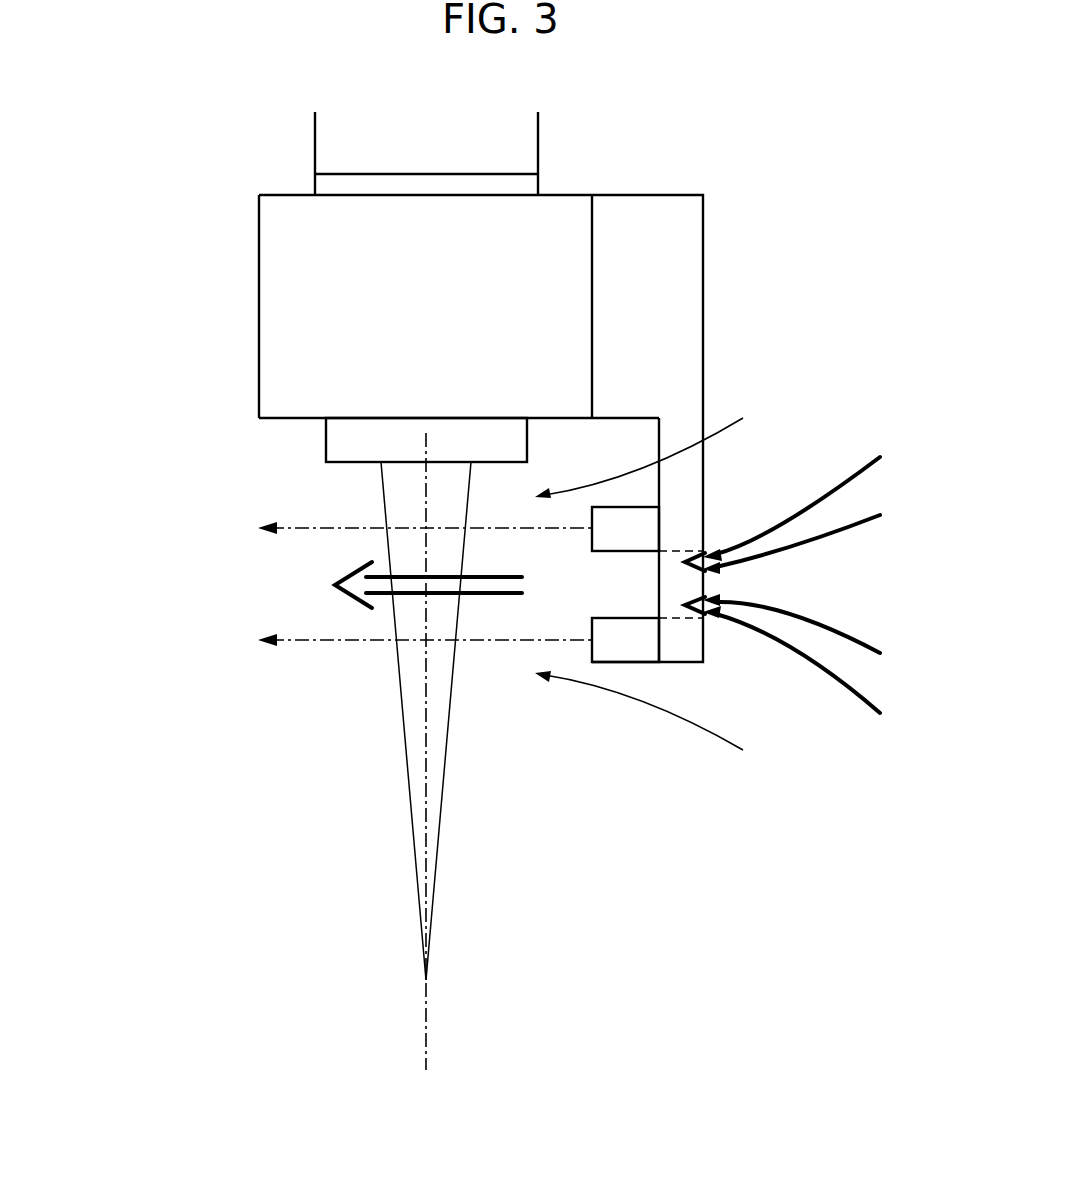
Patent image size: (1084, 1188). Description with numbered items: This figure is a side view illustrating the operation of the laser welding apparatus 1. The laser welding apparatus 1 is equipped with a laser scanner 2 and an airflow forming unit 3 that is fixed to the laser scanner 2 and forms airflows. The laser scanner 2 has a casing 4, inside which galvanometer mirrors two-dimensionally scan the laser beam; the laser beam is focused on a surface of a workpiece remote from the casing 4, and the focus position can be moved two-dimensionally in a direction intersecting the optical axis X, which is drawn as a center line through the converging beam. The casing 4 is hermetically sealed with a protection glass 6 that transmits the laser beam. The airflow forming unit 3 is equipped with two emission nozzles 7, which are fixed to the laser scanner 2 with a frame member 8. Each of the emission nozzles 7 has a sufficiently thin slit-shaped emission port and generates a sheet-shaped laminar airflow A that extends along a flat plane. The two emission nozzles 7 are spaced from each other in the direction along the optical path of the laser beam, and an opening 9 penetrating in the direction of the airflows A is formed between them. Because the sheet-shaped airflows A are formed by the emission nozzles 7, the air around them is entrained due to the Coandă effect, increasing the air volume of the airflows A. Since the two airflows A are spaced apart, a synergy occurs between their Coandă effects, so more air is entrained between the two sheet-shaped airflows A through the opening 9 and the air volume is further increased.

The laser welding apparatus 1 is at (151, 159).
The laser scanner 2 is at (250, 252).
The airflow forming unit 3 is at (714, 674).
The casing 4 is at (259, 338).
The protection glass 6 is at (412, 462).
The emission nozzles 7 is at (592, 547).
The frame member 8 is at (703, 470).
The opening 9 is at (676, 552).
The sheet-shaped airflow A is at (305, 530).
The optical axis X is at (426, 1025).